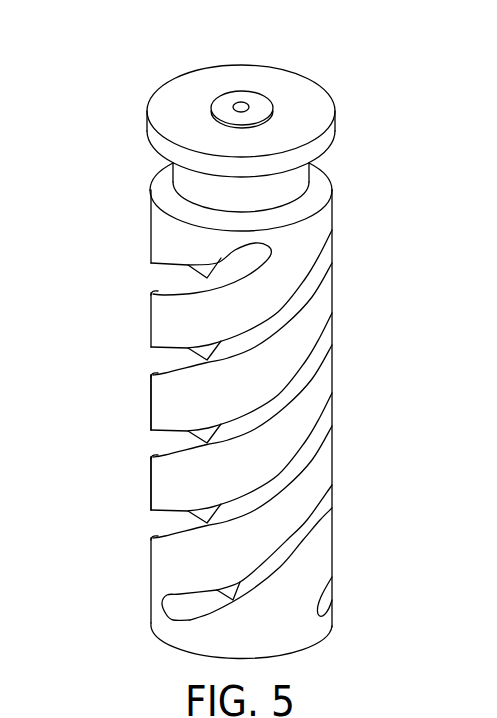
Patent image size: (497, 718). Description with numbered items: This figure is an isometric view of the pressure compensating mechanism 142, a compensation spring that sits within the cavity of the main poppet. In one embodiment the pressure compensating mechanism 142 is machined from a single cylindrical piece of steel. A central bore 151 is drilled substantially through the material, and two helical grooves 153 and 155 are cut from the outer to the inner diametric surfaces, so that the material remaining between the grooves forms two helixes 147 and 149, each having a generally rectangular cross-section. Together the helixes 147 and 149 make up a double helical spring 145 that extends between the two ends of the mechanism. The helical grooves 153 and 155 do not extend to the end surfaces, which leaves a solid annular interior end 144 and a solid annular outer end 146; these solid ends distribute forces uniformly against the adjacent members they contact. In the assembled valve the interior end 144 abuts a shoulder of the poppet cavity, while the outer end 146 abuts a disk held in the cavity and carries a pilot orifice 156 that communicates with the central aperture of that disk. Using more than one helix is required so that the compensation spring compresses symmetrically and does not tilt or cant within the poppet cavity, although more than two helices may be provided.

The pressure compensating mechanism 142 is at (351, 273).
The interior end 144 is at (317, 630).
The double helical spring 145 is at (303, 410).
The outer end 146 is at (320, 112).
The helix 147 is at (170, 402).
The helix 149 is at (170, 485).
The central bore 151 is at (188, 360).
The helical groove 153 is at (293, 473).
The helical groove 155 is at (293, 550).
The pilot orifice 156 is at (243, 107).